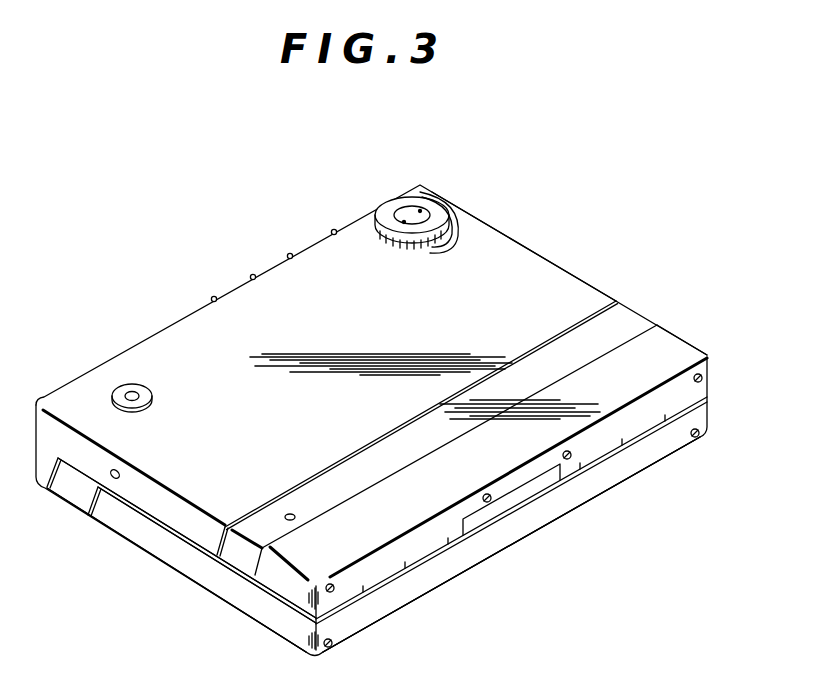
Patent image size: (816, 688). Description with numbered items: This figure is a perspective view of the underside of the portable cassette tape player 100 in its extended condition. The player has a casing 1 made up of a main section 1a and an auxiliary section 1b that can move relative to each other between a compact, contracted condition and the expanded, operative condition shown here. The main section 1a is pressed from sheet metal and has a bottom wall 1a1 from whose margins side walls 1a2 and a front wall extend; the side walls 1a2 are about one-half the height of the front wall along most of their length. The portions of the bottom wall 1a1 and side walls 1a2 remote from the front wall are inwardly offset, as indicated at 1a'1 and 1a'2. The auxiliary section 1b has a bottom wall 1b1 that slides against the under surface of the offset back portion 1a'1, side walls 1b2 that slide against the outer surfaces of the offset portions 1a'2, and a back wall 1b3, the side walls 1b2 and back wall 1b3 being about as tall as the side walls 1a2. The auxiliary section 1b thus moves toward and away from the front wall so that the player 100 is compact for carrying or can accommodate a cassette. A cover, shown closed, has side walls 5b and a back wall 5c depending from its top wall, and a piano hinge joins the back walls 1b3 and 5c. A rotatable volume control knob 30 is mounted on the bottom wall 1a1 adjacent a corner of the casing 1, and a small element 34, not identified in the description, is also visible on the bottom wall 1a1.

The casing 1 is at (166, 327).
The portable cassette tape player 100 is at (542, 252).
The main section 1a is at (330, 407).
The bottom wall 1a1 is at (494, 232).
The offset back portion of bottom wall 1a'1 is at (463, 408).
The side walls 1a2 is at (155, 502).
The offset back portions of side walls 1a'2 is at (202, 567).
The auxiliary section 1b is at (697, 350).
The bottom wall 1b1 is at (656, 342).
The side walls 1b2 is at (275, 582).
The back wall 1b3 is at (587, 448).
The volume control knob 30 is at (398, 205).
The hole 34 is at (290, 515).
The side walls of cover 5b is at (182, 567).
The back wall of cover 5c is at (507, 537).